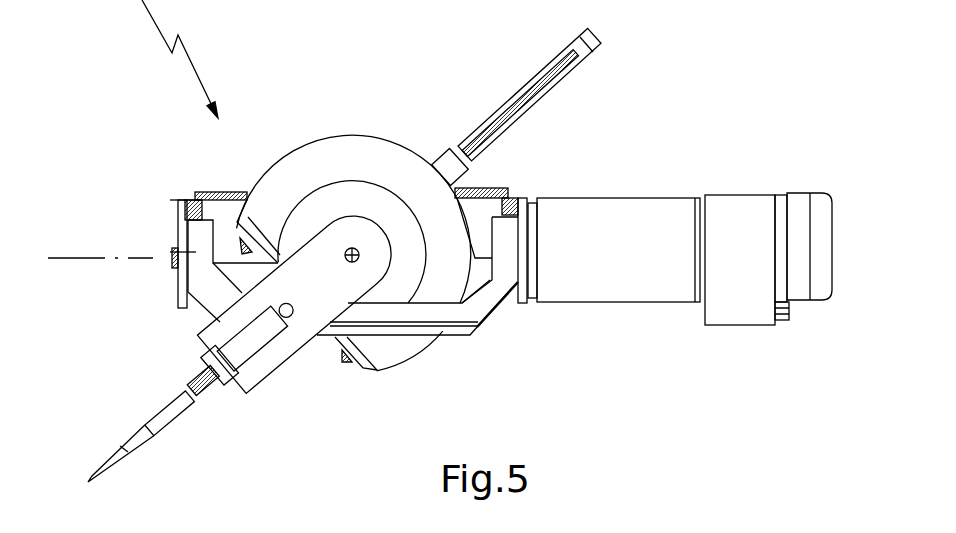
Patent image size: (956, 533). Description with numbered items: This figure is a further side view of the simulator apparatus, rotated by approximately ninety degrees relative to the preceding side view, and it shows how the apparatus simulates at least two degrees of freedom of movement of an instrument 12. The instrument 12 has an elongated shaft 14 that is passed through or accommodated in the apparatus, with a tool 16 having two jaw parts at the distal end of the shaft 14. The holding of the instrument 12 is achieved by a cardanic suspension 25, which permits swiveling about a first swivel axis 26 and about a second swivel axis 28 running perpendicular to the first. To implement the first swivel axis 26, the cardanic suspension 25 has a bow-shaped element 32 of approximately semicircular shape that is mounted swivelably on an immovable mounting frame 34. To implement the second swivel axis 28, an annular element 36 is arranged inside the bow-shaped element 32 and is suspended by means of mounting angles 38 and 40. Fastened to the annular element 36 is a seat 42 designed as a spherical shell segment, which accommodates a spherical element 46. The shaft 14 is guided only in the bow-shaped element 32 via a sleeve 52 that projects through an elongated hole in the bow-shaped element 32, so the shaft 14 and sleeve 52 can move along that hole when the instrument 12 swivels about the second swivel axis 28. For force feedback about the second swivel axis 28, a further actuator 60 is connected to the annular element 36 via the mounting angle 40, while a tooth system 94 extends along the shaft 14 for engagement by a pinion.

The instrument 12 is at (493, 67).
The elongated shaft 14 is at (177, 415).
The tool 16 is at (116, 452).
The cardanic suspension 25 is at (530, 0).
The first swivel axis 26 is at (352, 263).
The second swivel axis 28 is at (62, 258).
The bow-shaped element 32 is at (260, 367).
The mounting frame 34 is at (206, 190).
The annular element 36 is at (423, 327).
The mounting angle 38 is at (173, 262).
The mounting angle 40 is at (490, 283).
The seat 42 is at (380, 207).
The spherical element 46 is at (330, 137).
The sleeve 52 is at (222, 343).
The further actuator 60 is at (620, 270).
The tooth system 94 is at (550, 90).